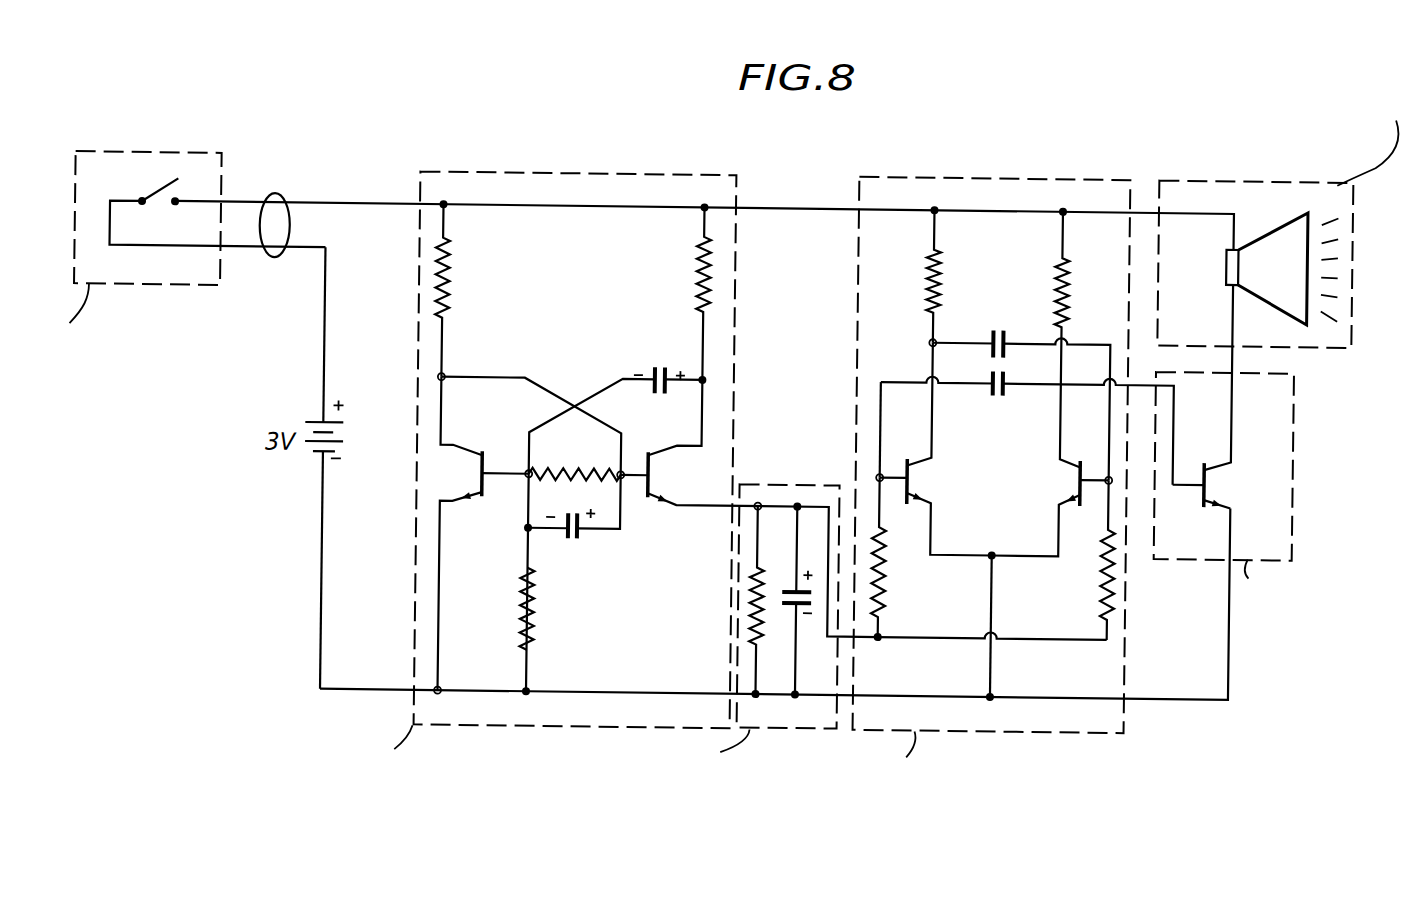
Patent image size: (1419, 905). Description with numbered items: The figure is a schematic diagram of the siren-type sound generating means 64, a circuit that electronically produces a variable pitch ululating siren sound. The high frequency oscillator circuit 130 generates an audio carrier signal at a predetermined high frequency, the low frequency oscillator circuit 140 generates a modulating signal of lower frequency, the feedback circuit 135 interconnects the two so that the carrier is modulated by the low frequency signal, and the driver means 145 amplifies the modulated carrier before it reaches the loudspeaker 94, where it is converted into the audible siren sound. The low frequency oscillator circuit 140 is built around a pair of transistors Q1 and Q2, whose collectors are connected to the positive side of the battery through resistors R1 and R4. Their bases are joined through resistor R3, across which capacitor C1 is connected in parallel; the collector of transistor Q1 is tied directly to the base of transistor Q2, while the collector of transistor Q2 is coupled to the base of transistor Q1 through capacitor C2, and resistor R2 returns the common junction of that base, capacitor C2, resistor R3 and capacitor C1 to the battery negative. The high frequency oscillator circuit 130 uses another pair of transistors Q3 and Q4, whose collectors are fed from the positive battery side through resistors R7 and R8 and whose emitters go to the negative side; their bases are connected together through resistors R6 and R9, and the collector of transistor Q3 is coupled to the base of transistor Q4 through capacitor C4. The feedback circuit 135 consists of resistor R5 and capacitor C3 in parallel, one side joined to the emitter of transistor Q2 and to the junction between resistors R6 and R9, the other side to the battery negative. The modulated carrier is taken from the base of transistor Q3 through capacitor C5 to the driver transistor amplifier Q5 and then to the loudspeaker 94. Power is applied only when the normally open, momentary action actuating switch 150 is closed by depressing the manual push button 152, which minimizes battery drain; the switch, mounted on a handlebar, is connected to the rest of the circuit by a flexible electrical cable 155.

The siren-type sound generating means 64 is at (1108, 126).
The loudspeaker 94 is at (1345, 336).
The high frequency oscillator circuit 130 is at (975, 177).
The feedback circuit means 135 is at (793, 488).
The low frequency oscillator circuit 140 is at (530, 176).
The driver means 145 is at (1293, 396).
The actuating switch 150 is at (100, 161).
The manual push button 152 is at (175, 185).
The flexible electrical cable 155 is at (280, 188).
The resistor R1 is at (449, 266).
The resistor R2 is at (526, 590).
The resistor R3 is at (590, 461).
The resistor R4 is at (699, 266).
The resistor R5 is at (752, 600).
The resistor R6 is at (884, 585).
The resistor R7 is at (929, 280).
The resistor R8 is at (1059, 276).
The resistor R9 is at (1105, 611).
The capacitor C1 is at (573, 541).
The capacitor C2 is at (656, 367).
The capacitor C3 is at (782, 592).
The capacitor C4 is at (997, 327).
The capacitor C5 is at (998, 392).
The transistor Q1 is at (473, 466).
The transistor Q2 is at (657, 466).
The transistor Q3 is at (917, 471).
The transistor Q4 is at (1078, 482).
The transistor amplifier Q5 is at (1220, 473).